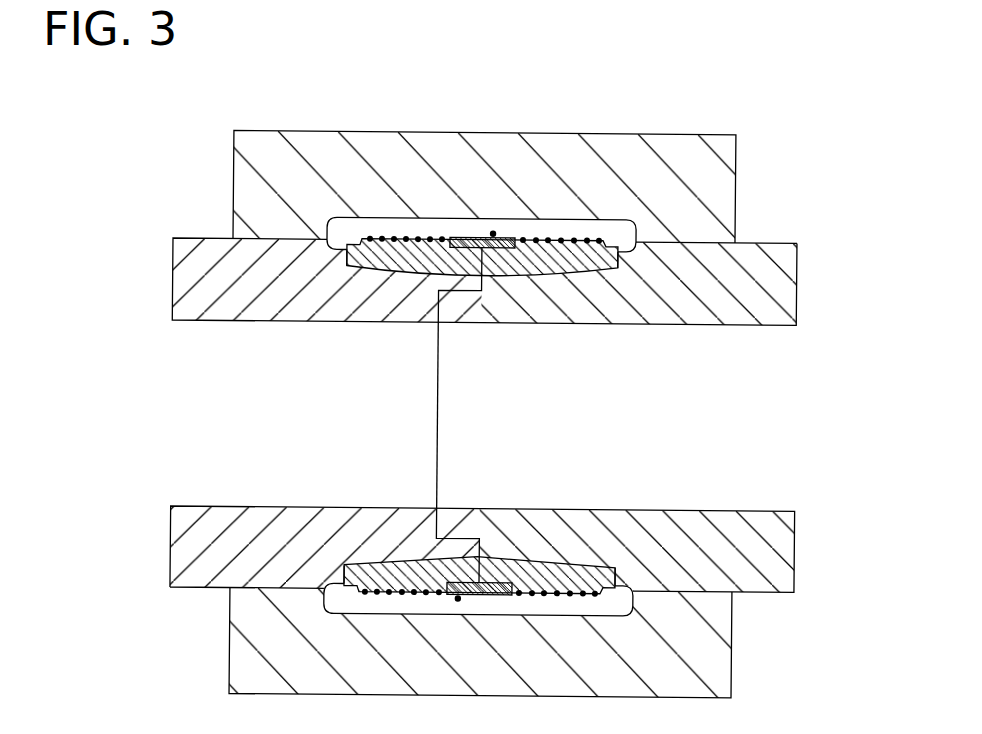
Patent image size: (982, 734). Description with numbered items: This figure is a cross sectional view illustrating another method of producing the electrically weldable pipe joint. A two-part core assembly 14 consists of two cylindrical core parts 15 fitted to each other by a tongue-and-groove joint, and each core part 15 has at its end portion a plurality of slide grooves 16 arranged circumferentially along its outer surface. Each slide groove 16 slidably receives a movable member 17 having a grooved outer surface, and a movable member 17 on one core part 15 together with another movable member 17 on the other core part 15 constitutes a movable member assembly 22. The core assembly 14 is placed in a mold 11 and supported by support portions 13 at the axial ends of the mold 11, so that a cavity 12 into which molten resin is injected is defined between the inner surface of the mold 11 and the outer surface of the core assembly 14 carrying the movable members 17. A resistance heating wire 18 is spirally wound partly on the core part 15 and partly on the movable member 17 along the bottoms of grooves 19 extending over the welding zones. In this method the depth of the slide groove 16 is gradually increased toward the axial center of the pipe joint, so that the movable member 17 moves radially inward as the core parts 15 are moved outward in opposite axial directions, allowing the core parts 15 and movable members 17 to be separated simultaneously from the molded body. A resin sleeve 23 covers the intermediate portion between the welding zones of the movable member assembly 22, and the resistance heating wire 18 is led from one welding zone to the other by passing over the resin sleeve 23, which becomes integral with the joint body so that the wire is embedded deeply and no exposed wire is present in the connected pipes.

The mold 11 is at (717, 186).
The cavity 12 is at (630, 229).
The support portion 13 is at (723, 241).
The core assembly 14 is at (150, 238).
The core part 15 is at (173, 277).
The slide groove 16 is at (373, 270).
The movable member 17 is at (413, 262).
The resistance heating wire 18 is at (565, 231).
The groove 19 is at (538, 244).
The movable member assembly 22 is at (492, 394).
The resin sleeve 23 is at (477, 232).